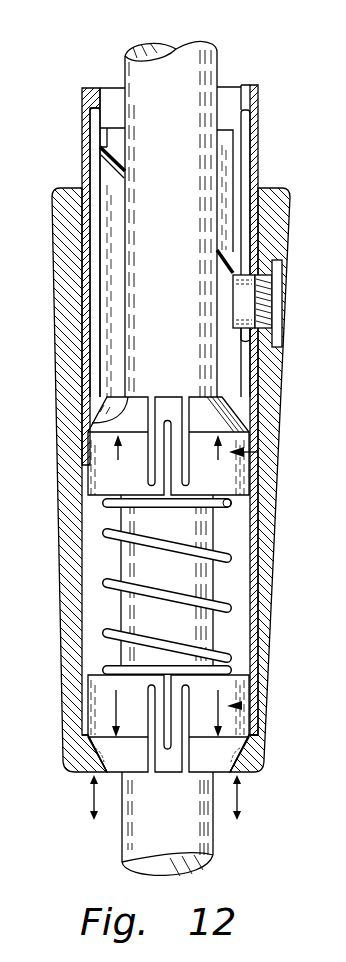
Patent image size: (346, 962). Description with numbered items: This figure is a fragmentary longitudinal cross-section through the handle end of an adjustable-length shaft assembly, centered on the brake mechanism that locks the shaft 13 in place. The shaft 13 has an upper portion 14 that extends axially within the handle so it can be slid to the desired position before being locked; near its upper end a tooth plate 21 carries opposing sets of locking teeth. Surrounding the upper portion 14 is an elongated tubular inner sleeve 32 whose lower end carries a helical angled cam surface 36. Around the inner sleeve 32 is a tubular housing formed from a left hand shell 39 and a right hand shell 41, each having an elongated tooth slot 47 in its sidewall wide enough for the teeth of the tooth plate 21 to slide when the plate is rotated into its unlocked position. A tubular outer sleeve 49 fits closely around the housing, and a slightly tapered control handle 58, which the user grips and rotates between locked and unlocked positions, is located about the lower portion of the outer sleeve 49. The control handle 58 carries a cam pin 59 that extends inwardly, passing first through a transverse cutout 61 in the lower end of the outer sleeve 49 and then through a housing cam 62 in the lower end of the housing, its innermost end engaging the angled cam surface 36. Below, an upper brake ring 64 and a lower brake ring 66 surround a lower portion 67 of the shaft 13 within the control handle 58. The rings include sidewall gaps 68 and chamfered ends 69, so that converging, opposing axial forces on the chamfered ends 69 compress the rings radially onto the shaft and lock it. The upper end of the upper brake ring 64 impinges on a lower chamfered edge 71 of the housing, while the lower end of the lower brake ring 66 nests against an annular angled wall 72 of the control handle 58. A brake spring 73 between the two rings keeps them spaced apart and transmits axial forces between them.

The shaft 13 is at (228, 840).
The upper portion 14 is at (218, 56).
The tooth plate 21 is at (6, 419).
The inner sleeve 32 is at (232, 155).
The angled cam surface 36 is at (92, 178).
The left hand shell 39 is at (95, 108).
The right hand shell 41 is at (247, 110).
The tooth slot 47 is at (7, 364).
The outer sleeve 49 is at (82, 94).
The control handle 58 is at (52, 282).
The cam pin 59 is at (282, 312).
The transverse cutout 61 is at (283, 340).
The housing cam 62 is at (240, 339).
The upper brake ring 64 is at (258, 452).
The lower brake ring 66 is at (243, 704).
The lower portion 67 is at (213, 532).
The sidewall gaps 68 is at (145, 462).
The chamfered ends 69 is at (223, 403).
The lower chamfered edge 71 is at (128, 410).
The annular angled wall 72 is at (78, 742).
The brake spring 73 is at (215, 618).